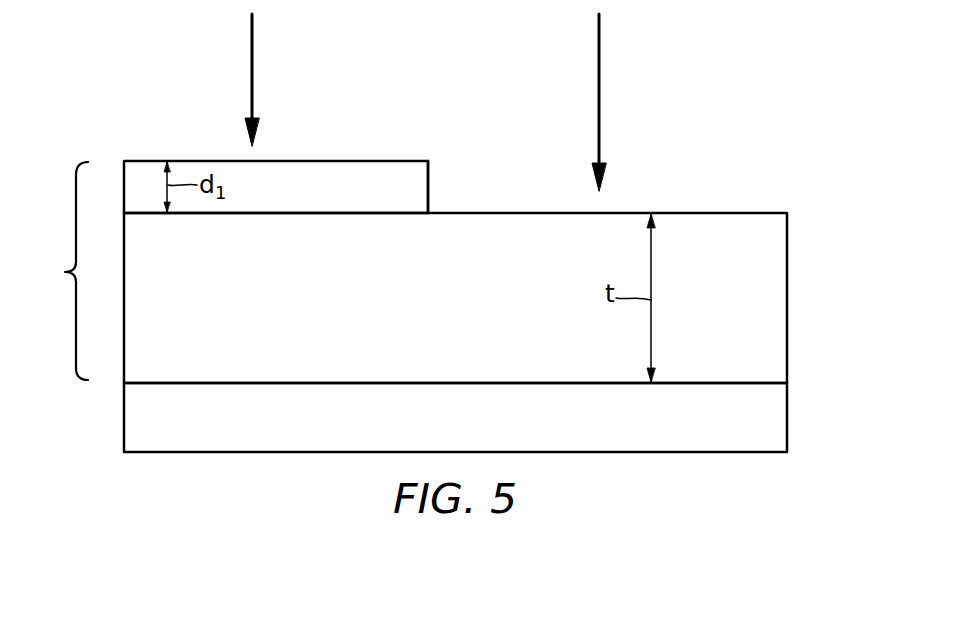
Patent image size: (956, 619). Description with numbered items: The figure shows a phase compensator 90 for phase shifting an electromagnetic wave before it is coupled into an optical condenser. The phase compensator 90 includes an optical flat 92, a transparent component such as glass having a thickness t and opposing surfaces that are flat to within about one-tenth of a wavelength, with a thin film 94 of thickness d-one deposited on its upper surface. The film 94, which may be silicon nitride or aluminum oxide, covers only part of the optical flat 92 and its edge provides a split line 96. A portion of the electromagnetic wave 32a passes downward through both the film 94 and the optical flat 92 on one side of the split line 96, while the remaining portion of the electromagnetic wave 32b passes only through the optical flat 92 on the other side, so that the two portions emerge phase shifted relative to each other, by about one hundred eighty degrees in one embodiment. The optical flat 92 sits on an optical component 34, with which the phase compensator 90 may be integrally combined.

The portion of the electromagnetic wave 32a is at (246, 31).
The remaining portion of the electromagnetic wave 32b is at (600, 38).
The phase compensator 90 is at (60, 271).
The optical flat 92 is at (772, 290).
The thin film 94 is at (352, 163).
The split line 96 is at (428, 188).
The optical component 34 is at (773, 418).